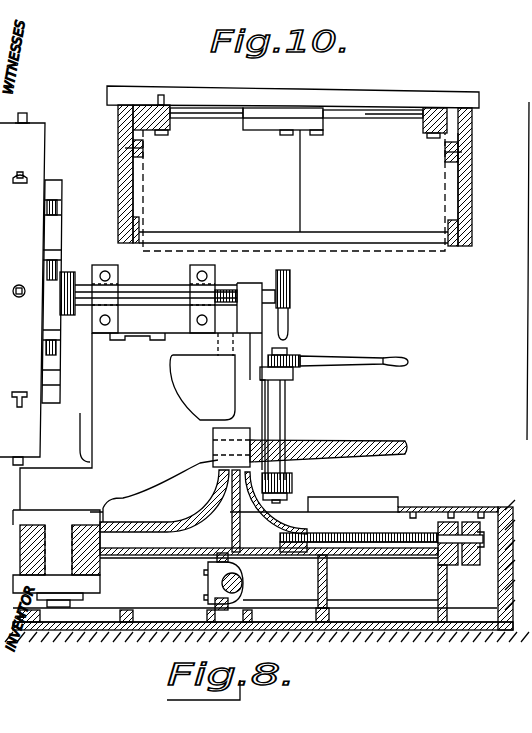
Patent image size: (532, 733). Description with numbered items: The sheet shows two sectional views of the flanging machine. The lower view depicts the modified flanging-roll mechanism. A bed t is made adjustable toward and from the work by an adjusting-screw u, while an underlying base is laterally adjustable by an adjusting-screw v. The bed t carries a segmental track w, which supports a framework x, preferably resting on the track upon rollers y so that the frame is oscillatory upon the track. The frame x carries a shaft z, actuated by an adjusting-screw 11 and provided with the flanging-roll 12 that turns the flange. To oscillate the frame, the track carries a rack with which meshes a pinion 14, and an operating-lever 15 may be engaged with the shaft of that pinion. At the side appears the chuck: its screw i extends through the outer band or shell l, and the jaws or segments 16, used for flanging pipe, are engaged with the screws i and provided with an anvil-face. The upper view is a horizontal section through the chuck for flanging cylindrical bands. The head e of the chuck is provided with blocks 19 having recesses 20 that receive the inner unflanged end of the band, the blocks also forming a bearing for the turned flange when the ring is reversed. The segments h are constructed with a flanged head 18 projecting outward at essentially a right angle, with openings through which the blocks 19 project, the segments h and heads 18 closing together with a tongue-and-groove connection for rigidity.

In FIG. 10, the head or face-plate e is at (388, 95).
In FIG. 10, the segments h is at (291, 178).
In FIG. 10, the flanged head 18 is at (230, 118).
In FIG. 10, the blocks 19 is at (170, 125).
In FIG. 10, the recesses 20 is at (150, 130).
In FIG. 8, the screw i is at (28, 113).
In FIG. 8, the outer band or shell l is at (22, 294).
In FIG. 8, the flanging-roll 12 is at (66, 272).
In FIG. 8, the shaft z is at (150, 290).
In FIG. 8, the adjusting-screw 11 is at (228, 290).
In FIG. 8, the jaws or segments 16 is at (141, 396).
In FIG. 8, the framework x is at (240, 392).
In FIG. 8, the operating-lever 15 is at (334, 408).
In FIG. 8, the rollers y is at (213, 434).
In FIG. 8, the segmental track w is at (159, 504).
In FIG. 8, the pinion 14 is at (292, 480).
In FIG. 8, the adjusting-screw u is at (364, 524).
In FIG. 8, the bed t is at (263, 568).
In FIG. 8, the adjusting-screw v is at (243, 583).